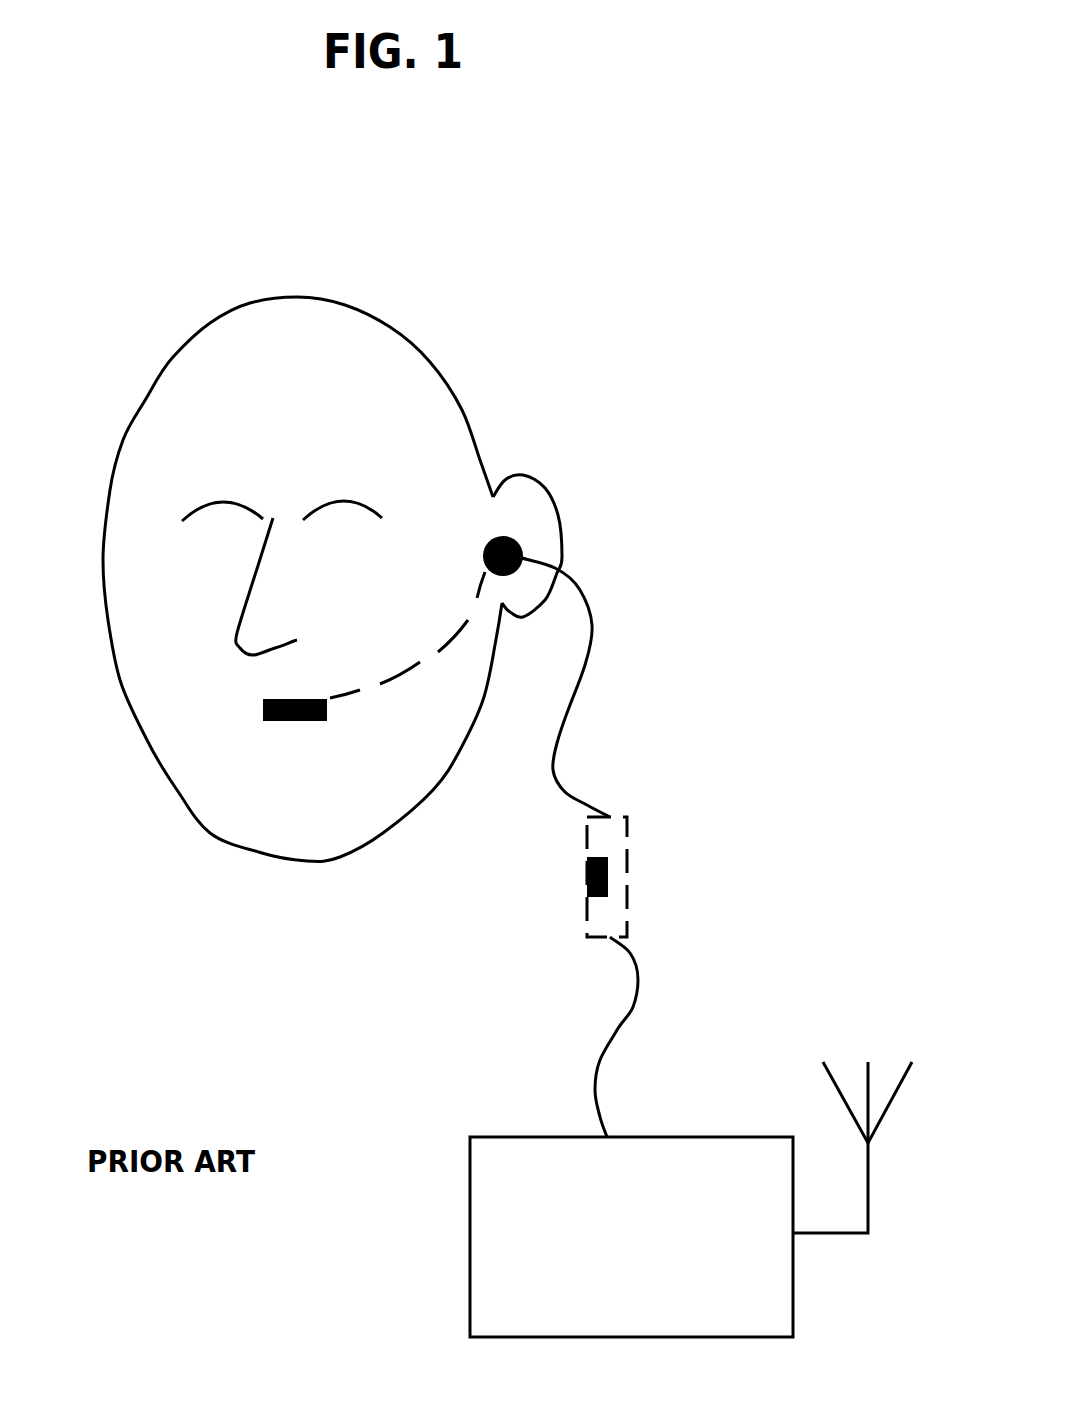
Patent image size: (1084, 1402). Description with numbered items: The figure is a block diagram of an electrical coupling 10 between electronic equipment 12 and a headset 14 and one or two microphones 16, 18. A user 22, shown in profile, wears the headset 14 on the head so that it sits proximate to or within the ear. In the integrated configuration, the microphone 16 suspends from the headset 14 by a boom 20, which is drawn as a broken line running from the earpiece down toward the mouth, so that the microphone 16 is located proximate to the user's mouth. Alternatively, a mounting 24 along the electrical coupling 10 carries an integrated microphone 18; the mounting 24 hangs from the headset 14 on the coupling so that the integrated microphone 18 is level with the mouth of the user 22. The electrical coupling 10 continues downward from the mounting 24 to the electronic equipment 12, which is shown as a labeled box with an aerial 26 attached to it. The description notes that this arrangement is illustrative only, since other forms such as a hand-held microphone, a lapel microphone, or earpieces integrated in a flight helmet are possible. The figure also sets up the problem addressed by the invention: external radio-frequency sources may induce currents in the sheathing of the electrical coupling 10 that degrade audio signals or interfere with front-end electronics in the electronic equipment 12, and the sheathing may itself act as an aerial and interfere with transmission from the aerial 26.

The electrical coupling 10 is at (684, 953).
The electronic equipment 12 is at (617, 1282).
The headset 14 is at (492, 537).
The microphone 16 is at (287, 721).
The integrated microphone 18 is at (587, 917).
The boom 20 is at (417, 663).
The user 22 is at (220, 318).
The mounting 24 is at (587, 878).
The aerial 26 is at (872, 1173).